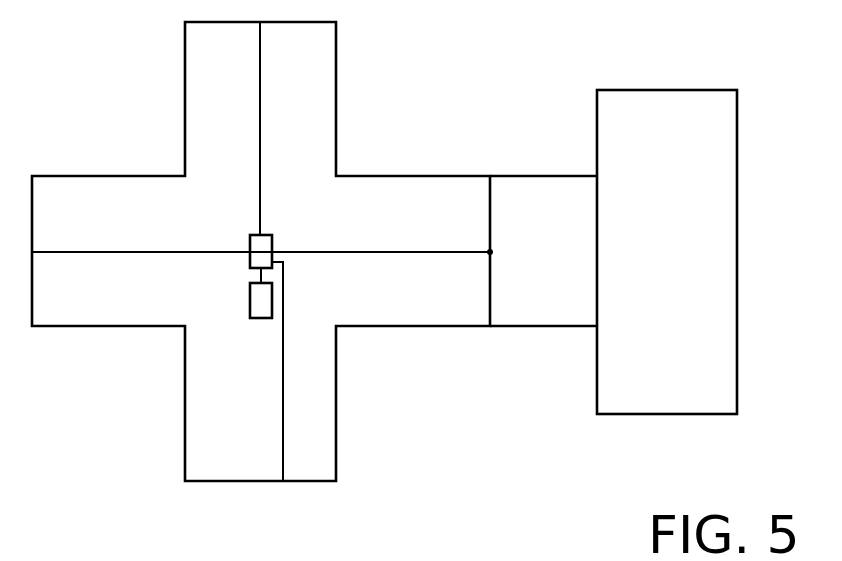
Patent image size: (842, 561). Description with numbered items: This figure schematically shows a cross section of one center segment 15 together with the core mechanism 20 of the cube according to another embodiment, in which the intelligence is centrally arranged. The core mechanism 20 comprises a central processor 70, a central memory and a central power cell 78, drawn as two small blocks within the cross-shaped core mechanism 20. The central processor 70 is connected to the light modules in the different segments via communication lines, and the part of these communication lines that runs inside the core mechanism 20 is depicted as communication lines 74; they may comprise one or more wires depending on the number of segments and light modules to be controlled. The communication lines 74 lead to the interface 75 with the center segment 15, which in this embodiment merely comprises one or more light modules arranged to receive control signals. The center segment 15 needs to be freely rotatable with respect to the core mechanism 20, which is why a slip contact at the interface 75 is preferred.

The core mechanism 20 is at (254, 481).
The communication lines 74 is at (260, 108).
The central processor 70 is at (257, 245).
The central power cell 78 is at (258, 310).
The interface 75 is at (490, 213).
The center segment 15 is at (660, 390).